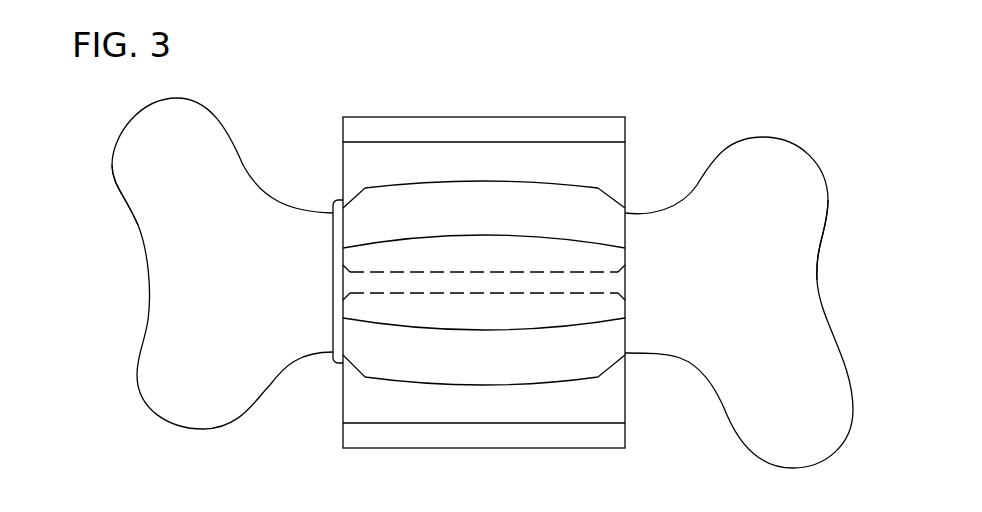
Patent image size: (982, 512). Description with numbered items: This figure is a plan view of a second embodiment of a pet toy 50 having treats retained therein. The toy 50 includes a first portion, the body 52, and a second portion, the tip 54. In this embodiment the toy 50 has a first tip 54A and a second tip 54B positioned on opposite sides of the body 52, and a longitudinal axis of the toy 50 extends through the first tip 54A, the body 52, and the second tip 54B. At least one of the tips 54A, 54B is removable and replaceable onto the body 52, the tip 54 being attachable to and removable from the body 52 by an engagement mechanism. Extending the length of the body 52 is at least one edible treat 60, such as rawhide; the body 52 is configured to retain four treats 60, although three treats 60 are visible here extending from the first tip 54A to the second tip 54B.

The toy 50 is at (537, 78).
The body 52 is at (573, 187).
The tip 54 is at (112, 150).
The first tip 54A is at (115, 188).
The second tip 54B is at (828, 188).
The edible treat 60 is at (398, 120).